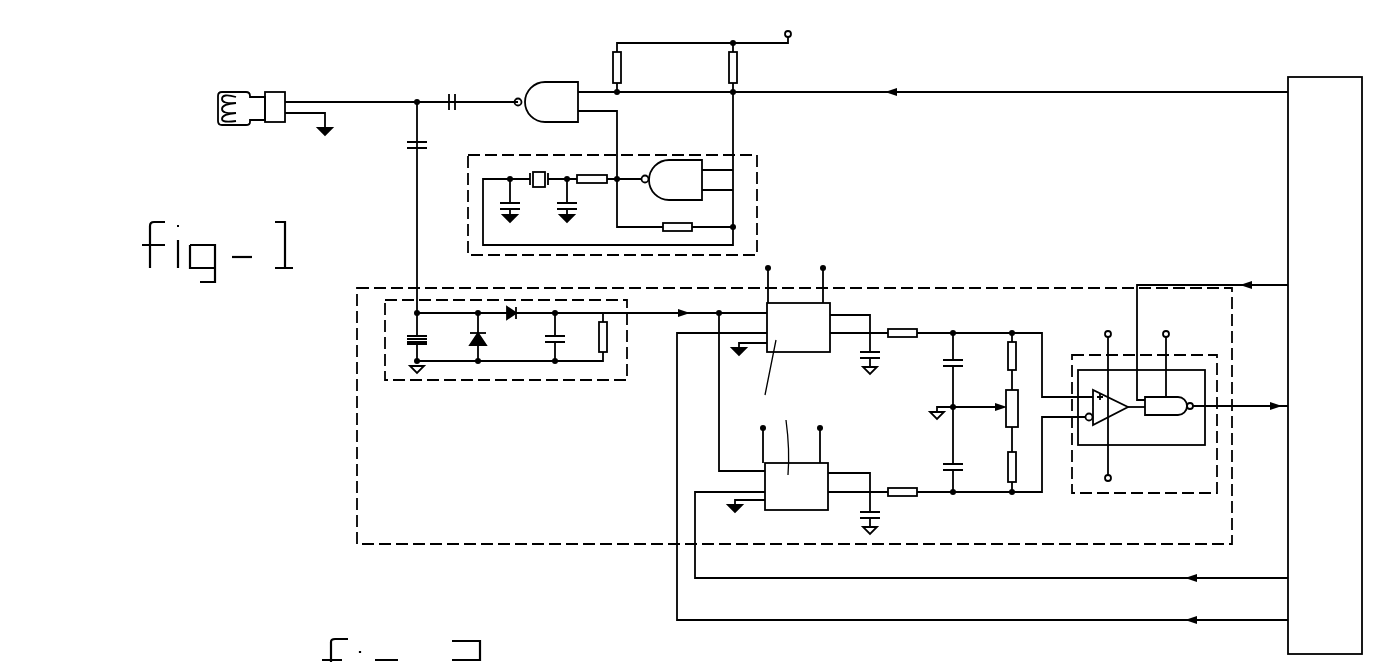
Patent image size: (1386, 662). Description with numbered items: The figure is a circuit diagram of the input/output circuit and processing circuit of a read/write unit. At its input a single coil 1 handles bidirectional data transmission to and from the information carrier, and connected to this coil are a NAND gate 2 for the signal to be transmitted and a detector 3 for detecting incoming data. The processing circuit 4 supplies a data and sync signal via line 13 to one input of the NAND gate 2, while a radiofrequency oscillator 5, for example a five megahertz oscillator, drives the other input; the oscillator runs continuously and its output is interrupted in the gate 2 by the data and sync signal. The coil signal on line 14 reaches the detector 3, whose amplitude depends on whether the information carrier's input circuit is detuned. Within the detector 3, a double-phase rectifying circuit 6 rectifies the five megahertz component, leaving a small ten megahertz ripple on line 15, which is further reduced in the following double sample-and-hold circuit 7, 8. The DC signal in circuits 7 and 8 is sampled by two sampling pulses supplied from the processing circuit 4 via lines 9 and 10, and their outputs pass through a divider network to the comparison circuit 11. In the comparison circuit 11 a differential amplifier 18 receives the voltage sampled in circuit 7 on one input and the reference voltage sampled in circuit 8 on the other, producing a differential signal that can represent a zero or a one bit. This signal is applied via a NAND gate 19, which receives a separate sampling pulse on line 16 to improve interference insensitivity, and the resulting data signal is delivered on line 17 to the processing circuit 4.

The coil 1 is at (233, 128).
The NAND gate 2 is at (540, 92).
The detector 3 is at (357, 424).
The processing circuit 4 is at (1296, 157).
The radiofrequency oscillator 5 is at (763, 183).
The double-phase rectifying circuit 6 is at (500, 385).
The sample-and-hold circuit 7 is at (792, 342).
The sample-and-hold circuit 8 is at (800, 500).
The line 9 is at (968, 621).
The line 10 is at (920, 580).
The comparison circuit 11 is at (1118, 496).
The line 13 is at (1093, 92).
The line 14 is at (360, 95).
The line 15 is at (662, 316).
The line 16 is at (1217, 284).
The line 17 is at (1250, 408).
The differential amplifier 18 is at (1098, 388).
The NAND gate 19 is at (1176, 397).